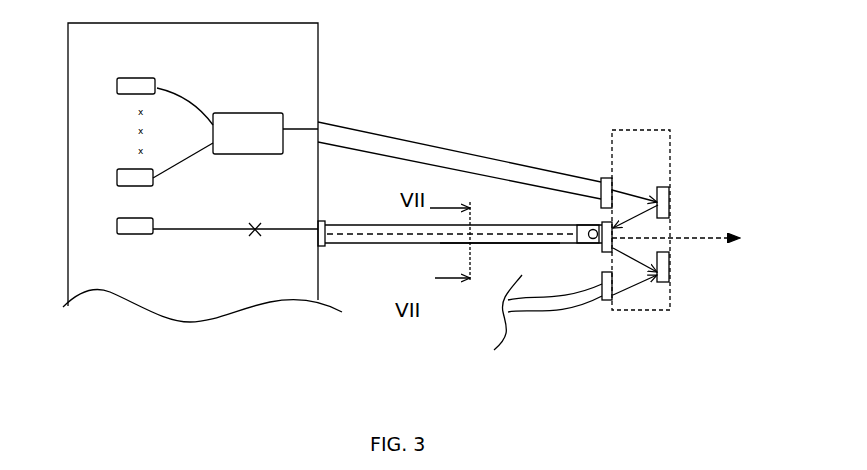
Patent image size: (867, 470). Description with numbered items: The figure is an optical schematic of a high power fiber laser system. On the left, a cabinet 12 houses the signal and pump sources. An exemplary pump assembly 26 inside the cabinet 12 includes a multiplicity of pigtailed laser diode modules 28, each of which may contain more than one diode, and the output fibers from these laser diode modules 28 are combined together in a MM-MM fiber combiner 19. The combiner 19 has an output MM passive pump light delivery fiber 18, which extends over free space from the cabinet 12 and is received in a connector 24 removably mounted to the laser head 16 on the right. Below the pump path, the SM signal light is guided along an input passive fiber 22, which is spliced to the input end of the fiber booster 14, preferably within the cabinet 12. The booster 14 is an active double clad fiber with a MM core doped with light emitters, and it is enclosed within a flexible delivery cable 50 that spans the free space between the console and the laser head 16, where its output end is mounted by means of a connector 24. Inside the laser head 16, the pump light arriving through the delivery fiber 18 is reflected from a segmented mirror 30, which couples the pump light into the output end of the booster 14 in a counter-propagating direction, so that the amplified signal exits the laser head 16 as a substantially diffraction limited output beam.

The cabinet 12 is at (202, 172).
The fiber booster 14 is at (299, 229).
The laser head 16 is at (676, 247).
The pump light delivery fiber 18 is at (421, 154).
The MM-MM fiber combiner 19 is at (235, 133).
The input passive fiber 22 is at (218, 230).
The connector 24 is at (603, 178).
The pump assembly 26 is at (127, 132).
The pigtailed laser diode module 28 is at (132, 87).
The segmented mirror 30 is at (693, 193).
The flexible delivery cable 50 is at (407, 245).